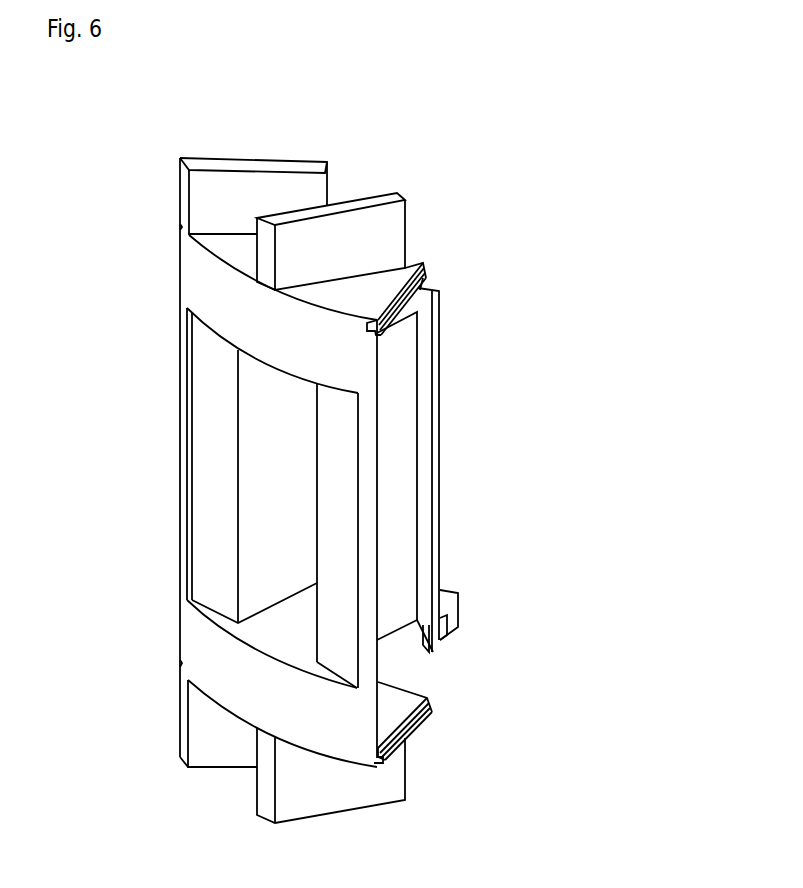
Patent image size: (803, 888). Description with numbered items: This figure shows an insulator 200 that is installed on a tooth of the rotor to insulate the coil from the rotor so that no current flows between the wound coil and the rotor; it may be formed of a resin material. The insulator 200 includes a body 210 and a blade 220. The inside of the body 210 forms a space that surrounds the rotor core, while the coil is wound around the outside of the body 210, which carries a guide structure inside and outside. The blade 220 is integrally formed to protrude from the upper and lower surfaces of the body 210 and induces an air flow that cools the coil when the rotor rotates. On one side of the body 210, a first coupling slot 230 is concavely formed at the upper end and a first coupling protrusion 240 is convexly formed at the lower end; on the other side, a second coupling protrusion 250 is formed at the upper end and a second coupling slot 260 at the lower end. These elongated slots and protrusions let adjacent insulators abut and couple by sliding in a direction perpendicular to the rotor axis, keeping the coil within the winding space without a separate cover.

The insulator 200 is at (416, 146).
The body 210 is at (203, 286).
The blade 220 is at (253, 162).
The first coupling slot 230 is at (432, 285).
The first coupling protrusion 240 is at (420, 728).
The second coupling protrusion 250 is at (177, 226).
The second coupling slot 260 is at (178, 662).